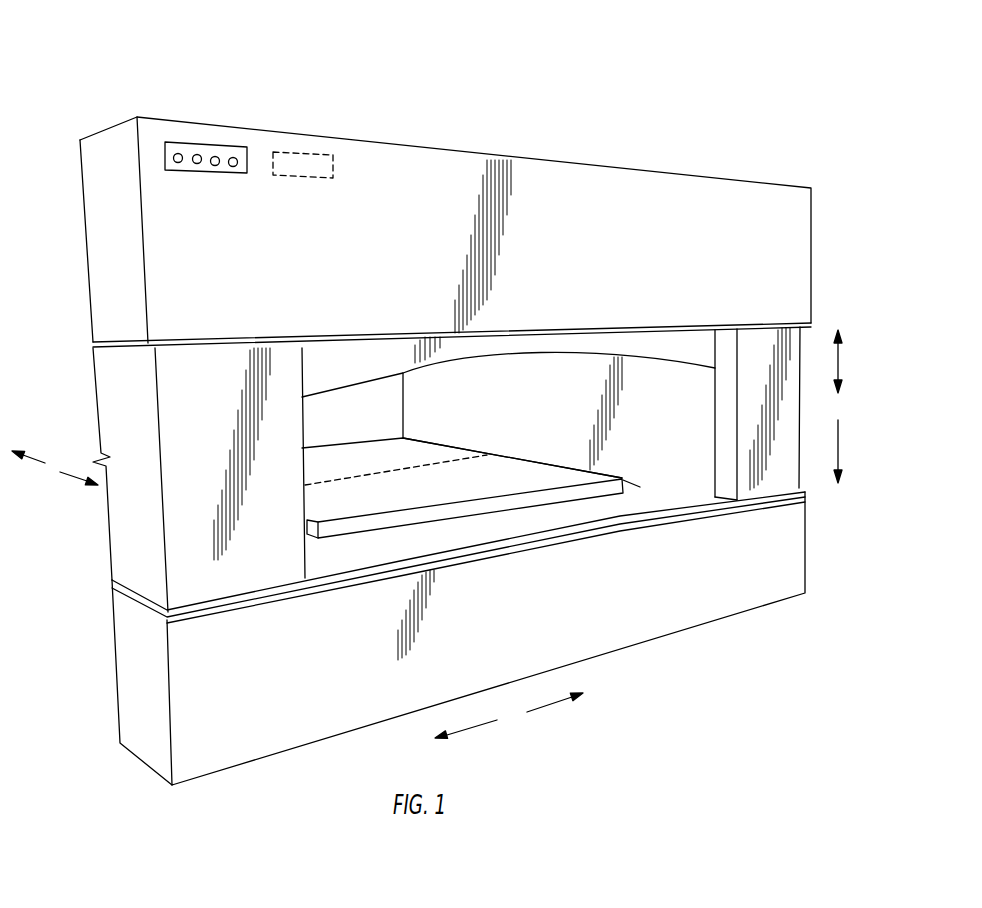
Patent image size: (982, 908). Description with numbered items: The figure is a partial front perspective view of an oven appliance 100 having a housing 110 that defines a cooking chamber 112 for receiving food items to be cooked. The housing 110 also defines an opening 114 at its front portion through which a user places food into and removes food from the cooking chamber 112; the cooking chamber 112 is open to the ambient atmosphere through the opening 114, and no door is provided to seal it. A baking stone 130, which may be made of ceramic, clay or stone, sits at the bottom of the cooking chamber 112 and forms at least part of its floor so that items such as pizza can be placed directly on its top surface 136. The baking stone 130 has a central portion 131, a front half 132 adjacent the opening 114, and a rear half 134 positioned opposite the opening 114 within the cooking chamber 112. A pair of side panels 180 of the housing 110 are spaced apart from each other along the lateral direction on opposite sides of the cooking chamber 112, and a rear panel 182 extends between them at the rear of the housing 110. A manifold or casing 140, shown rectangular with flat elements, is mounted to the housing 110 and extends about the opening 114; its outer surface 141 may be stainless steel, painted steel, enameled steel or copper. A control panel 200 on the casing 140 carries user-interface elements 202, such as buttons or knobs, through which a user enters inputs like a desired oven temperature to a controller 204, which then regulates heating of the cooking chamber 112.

The oven appliance 100 is at (143, 88).
The housing 110 is at (320, 560).
The cooking chamber 112 is at (390, 392).
The opening 114 is at (489, 548).
The baking stone 130 is at (363, 527).
The central portion 131 is at (492, 452).
The front half 132 is at (527, 477).
The rear half 134 is at (418, 452).
The top surface 136 is at (334, 500).
The casing 140 is at (790, 240).
The outer surface 141 is at (753, 580).
The side panels 180 is at (675, 387).
The rear panel 182 is at (337, 402).
The control panel 200 is at (217, 143).
The user-interface elements 202 is at (215, 165).
The controller 204 is at (323, 152).